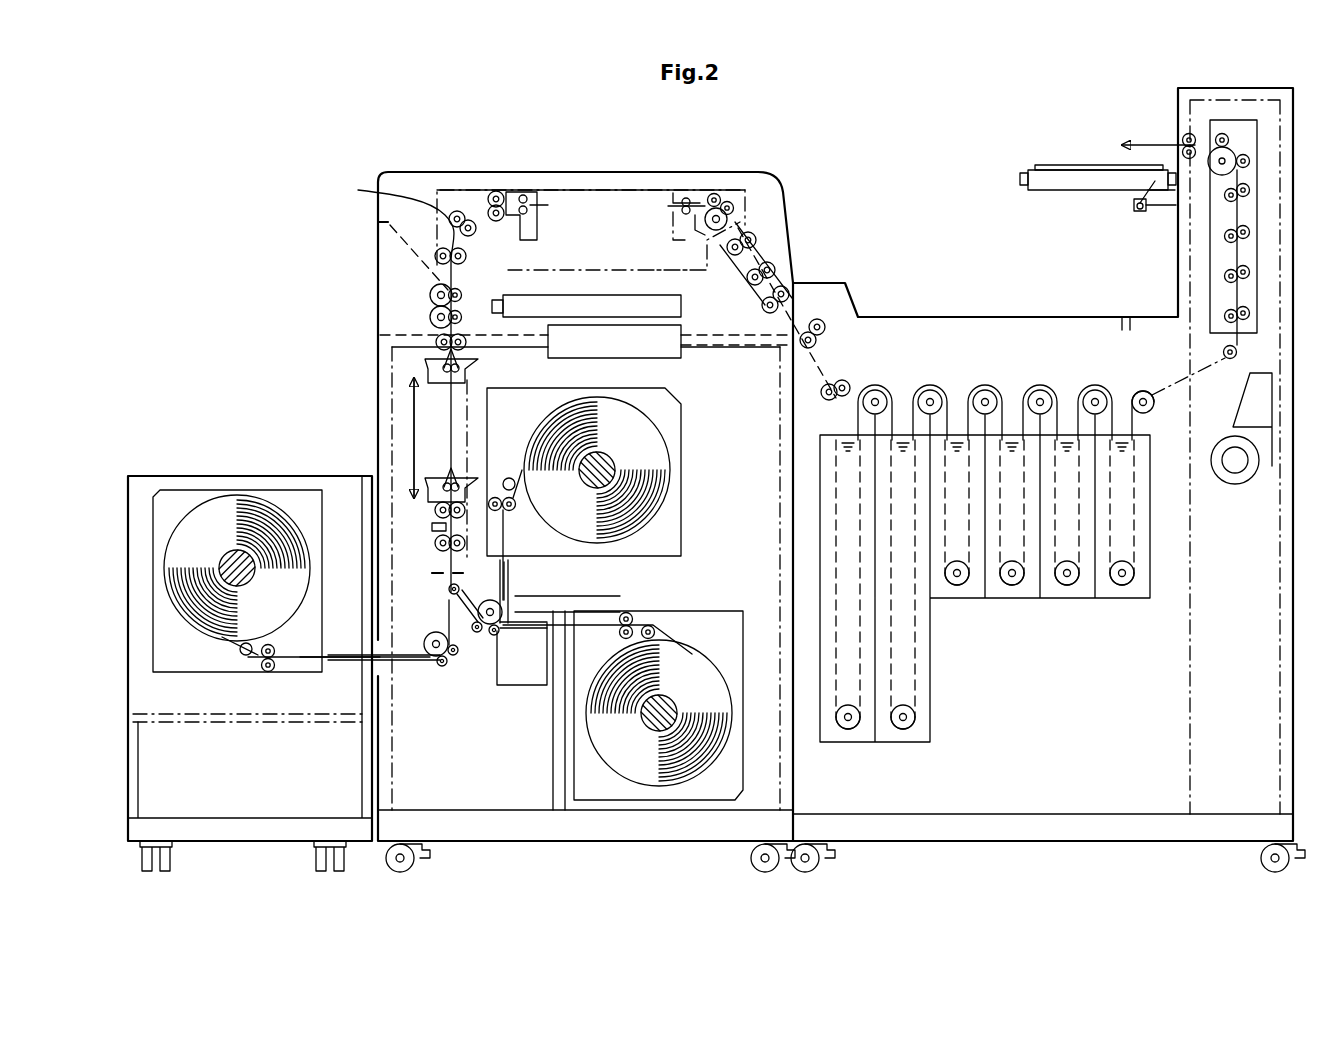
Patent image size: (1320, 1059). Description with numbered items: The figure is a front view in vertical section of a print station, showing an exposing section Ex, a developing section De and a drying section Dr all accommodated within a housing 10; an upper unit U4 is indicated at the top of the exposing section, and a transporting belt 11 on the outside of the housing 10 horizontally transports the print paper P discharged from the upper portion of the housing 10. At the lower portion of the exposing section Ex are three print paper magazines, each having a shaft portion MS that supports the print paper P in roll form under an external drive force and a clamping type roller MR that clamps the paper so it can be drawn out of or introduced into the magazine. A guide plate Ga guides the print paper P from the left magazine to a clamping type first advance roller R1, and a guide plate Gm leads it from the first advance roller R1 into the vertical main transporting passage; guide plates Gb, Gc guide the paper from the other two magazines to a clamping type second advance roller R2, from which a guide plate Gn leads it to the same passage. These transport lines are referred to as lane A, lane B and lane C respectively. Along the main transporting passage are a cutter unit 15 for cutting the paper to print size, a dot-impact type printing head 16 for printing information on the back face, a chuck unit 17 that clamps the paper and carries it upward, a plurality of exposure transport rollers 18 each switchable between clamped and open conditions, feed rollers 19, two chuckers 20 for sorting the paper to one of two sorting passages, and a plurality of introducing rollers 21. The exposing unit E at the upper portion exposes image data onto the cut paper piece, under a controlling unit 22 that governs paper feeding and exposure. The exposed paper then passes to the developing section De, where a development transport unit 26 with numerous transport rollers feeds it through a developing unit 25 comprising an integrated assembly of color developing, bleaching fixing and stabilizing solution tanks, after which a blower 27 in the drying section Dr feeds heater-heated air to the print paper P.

The exposing section Ex is at (368, 170).
The upper unit U4 is at (622, 188).
The print paper P is at (1147, 138).
The conveying rollers 19 is at (496, 198).
The chuckers 20 is at (530, 187).
The introducing rollers 21 is at (733, 214).
The exposure transport rollers 18 is at (430, 318).
The exposing unit E is at (590, 295).
The controlling unit 22 is at (668, 358).
The chuck unit 17 is at (440, 478).
The dot-impact type printing head 16 is at (430, 526).
The cutter unit 15 is at (440, 573).
The shaft portion MS is at (237, 555).
The clamping type roller MR is at (274, 666).
The guide plate Ga is at (340, 652).
The guide plate Gb is at (512, 580).
The guide plate Gc is at (540, 630).
The guide plate Gm is at (449, 622).
The guide plate Gn is at (472, 645).
The first advance roller R1 is at (430, 646).
The second advance roller R2 is at (490, 626).
The lane B is at (516, 597).
The lane C is at (523, 644).
The lane A is at (430, 676).
The housing 10 is at (1010, 316).
The developing section De is at (965, 314).
The drying section Dr is at (1207, 246).
The transporting belt 11 is at (1062, 167).
The developing unit 25 is at (932, 690).
The development transport unit 26 is at (918, 388).
The blower 27 is at (1242, 484).